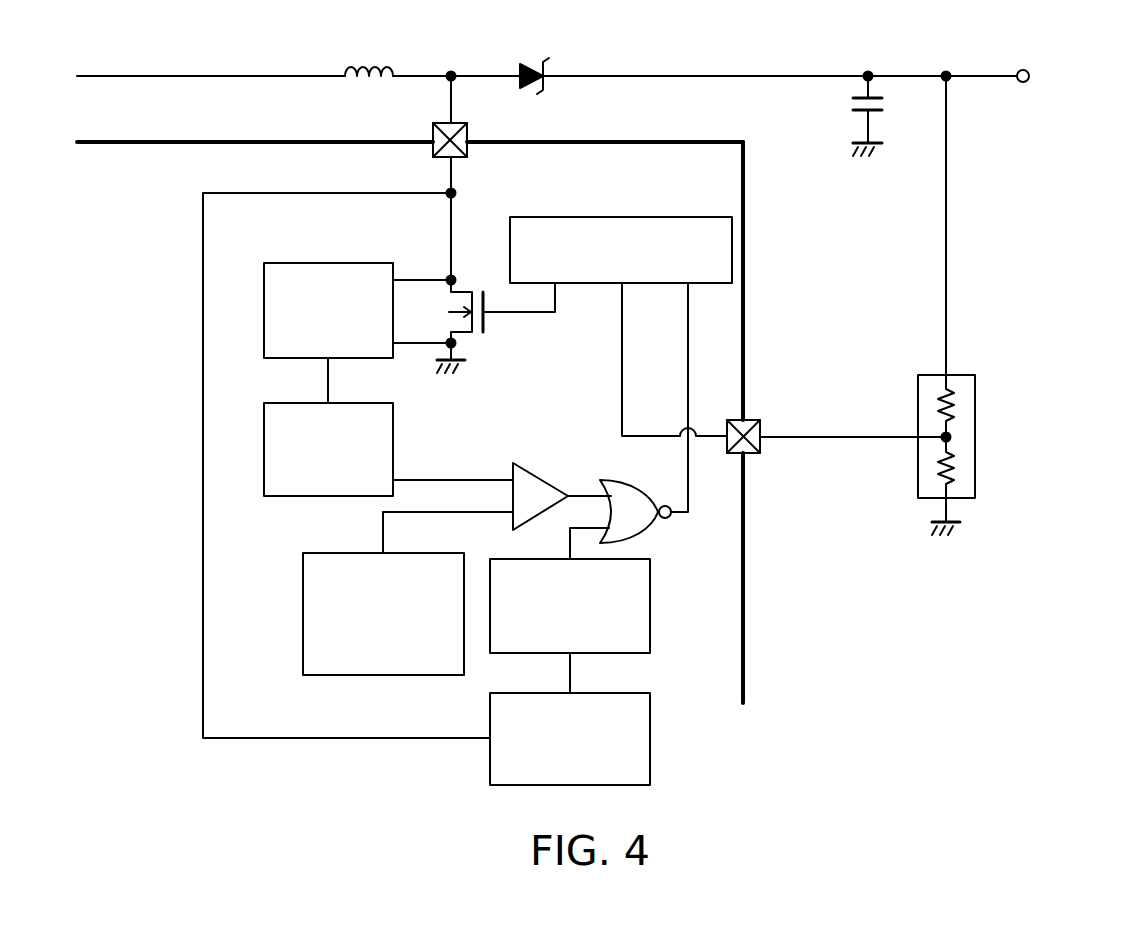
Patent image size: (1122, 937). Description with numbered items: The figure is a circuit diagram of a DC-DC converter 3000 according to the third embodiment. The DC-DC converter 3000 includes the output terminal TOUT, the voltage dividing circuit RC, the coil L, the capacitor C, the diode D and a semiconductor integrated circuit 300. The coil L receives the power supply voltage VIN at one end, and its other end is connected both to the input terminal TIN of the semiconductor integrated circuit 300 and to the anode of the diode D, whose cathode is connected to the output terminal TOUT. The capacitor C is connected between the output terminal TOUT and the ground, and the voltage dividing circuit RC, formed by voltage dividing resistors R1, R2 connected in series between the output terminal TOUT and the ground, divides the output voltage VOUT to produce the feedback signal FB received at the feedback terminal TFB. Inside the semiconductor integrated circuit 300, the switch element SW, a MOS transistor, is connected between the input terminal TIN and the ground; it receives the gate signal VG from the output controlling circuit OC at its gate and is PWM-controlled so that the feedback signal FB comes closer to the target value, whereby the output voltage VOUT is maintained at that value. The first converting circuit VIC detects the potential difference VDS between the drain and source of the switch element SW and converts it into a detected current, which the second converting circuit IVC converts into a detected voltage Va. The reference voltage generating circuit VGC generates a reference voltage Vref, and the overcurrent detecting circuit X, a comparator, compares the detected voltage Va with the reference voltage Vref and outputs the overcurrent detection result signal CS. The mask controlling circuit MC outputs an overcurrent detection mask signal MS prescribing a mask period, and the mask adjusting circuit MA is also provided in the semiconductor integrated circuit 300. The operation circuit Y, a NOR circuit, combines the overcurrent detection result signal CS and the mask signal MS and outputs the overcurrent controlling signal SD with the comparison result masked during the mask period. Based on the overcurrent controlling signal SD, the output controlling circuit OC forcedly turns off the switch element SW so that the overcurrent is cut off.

The power supply voltage VIN is at (255, 92).
The coil L is at (371, 64).
The diode D is at (537, 58).
The input terminal TIN is at (469, 128).
The semiconductor integrated circuit 300 is at (745, 196).
The output terminal TOUT is at (1023, 69).
The output voltage VOUT is at (1019, 224).
The capacitor C is at (883, 96).
The reference voltage generating circuit VGC is at (383, 676).
The first converting circuit VIC is at (330, 262).
The switch element SW is at (466, 288).
The potential difference VDS is at (436, 314).
The gate signal VG is at (519, 314).
The output controlling circuit OC is at (623, 216).
The overcurrent controlling signal SD is at (696, 397).
The second converting circuit IVC is at (394, 448).
The detected voltage Va is at (453, 467).
The reference voltage Vref is at (420, 533).
The overcurrent detecting circuit X is at (538, 472).
The overcurrent detection result signal CS is at (589, 485).
The operation circuit Y is at (647, 526).
The overcurrent detection mask signal MS is at (573, 543).
The feedback signal FB is at (784, 360).
The feedback terminal TFB is at (760, 449).
The voltage dividing circuit RC is at (984, 455).
The voltage dividing resistor R1 is at (953, 409).
The voltage dividing resistor R2 is at (953, 479).
The mask controlling circuit MC is at (651, 605).
The mask adjusting circuit MA is at (651, 740).
The DC-DC converter 3000 is at (732, 820).